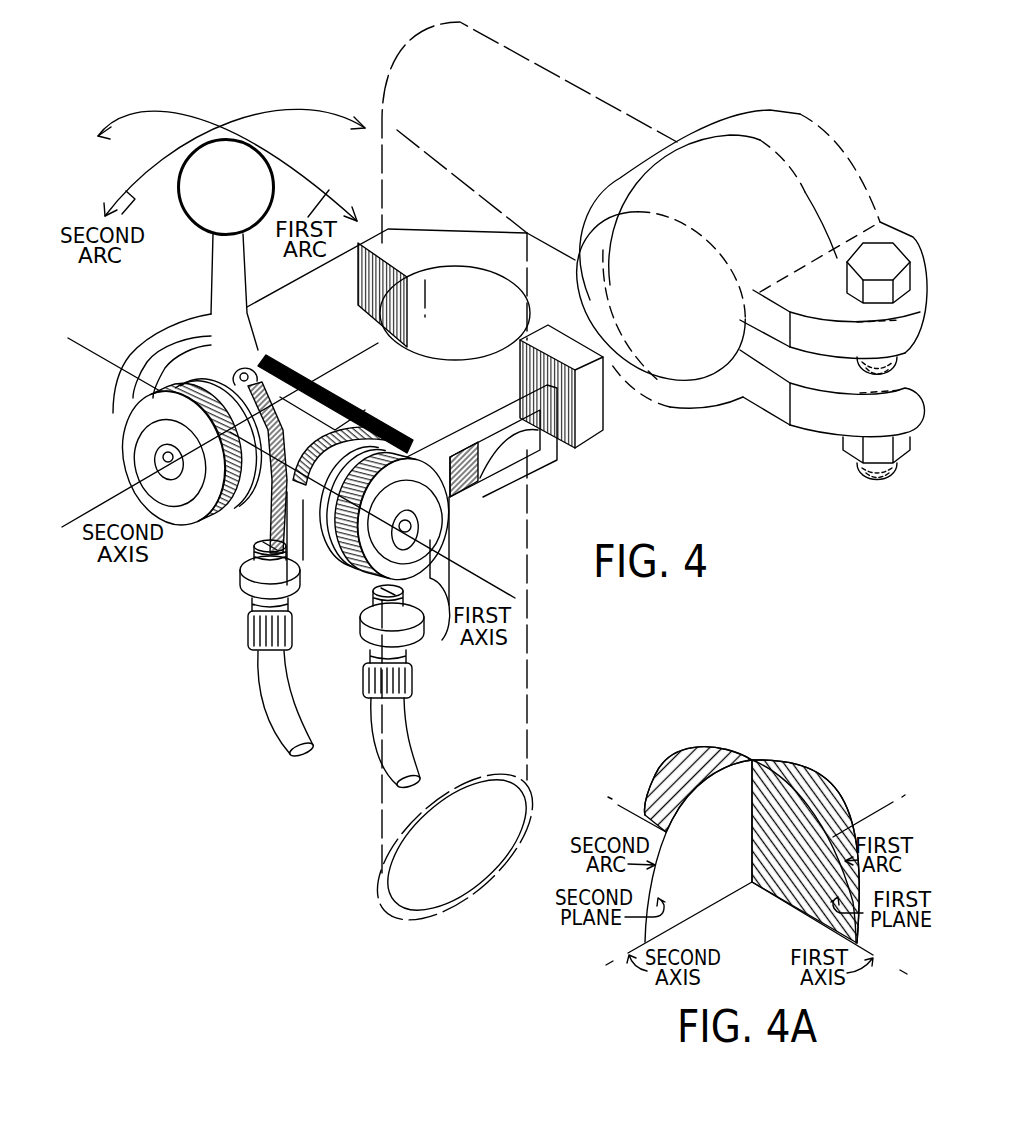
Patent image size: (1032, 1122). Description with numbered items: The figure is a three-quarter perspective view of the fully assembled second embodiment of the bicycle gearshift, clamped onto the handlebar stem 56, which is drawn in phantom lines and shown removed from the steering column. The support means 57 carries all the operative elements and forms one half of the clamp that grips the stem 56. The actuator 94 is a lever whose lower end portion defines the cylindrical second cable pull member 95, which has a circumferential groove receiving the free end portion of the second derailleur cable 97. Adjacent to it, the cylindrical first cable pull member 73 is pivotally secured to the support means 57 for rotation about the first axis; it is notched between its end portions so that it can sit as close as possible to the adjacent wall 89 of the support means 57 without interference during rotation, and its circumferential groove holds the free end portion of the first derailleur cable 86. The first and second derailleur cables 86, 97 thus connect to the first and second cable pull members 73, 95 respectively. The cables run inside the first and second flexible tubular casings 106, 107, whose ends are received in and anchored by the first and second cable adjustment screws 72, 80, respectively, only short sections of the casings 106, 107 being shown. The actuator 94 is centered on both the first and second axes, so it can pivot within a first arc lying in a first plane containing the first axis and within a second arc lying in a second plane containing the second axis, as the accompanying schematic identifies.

The handlebar stem 56 is at (633, 117).
The support means 57 is at (528, 467).
The first cable adjustment screw 72 is at (410, 675).
The first cable pull member 73 is at (301, 548).
The second cable adjustment screw 80 is at (250, 630).
The first derailleur cable 86 is at (322, 459).
The adjacent wall 89 is at (377, 436).
The actuator 94 is at (207, 212).
The second cable pull member 95 is at (270, 384).
The second derailleur cable 97 is at (267, 513).
The first flexible tubular casing 106 is at (400, 727).
The second flexible tubular casing 107 is at (280, 720).